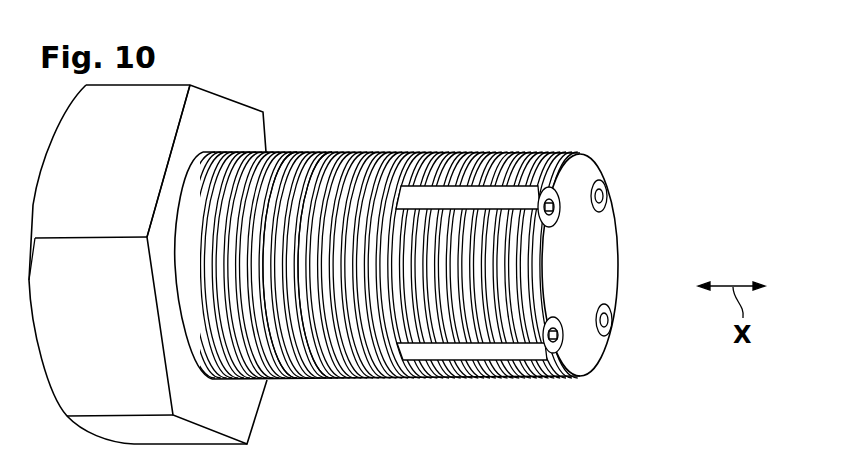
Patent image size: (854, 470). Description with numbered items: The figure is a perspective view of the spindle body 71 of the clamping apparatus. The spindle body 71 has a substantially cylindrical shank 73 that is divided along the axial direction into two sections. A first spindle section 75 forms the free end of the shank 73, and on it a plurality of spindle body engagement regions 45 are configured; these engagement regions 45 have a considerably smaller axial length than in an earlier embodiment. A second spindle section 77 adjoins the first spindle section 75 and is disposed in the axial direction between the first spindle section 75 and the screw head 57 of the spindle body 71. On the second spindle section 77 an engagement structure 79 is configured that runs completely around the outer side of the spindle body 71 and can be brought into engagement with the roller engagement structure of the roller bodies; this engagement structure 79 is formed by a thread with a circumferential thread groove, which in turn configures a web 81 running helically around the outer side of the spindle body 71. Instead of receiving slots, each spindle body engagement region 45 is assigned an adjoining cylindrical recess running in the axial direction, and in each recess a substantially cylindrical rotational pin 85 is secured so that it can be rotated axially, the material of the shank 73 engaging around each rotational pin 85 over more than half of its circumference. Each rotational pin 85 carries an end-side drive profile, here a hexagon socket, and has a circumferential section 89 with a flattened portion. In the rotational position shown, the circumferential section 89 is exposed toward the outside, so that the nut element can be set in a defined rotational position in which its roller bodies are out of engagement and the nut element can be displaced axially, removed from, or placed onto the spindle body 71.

The spindle body 71 is at (620, 121).
The second spindle section 77 is at (340, 398).
The screw head 57 is at (150, 150).
The first spindle section 75 is at (457, 398).
The shank 73 is at (358, 150).
The engagement structure 79 is at (303, 152).
The web 81 is at (333, 152).
The spindle body engagement region 45 is at (512, 202).
The rotational pin 85 is at (427, 200).
The circumferential section 89 is at (523, 150).